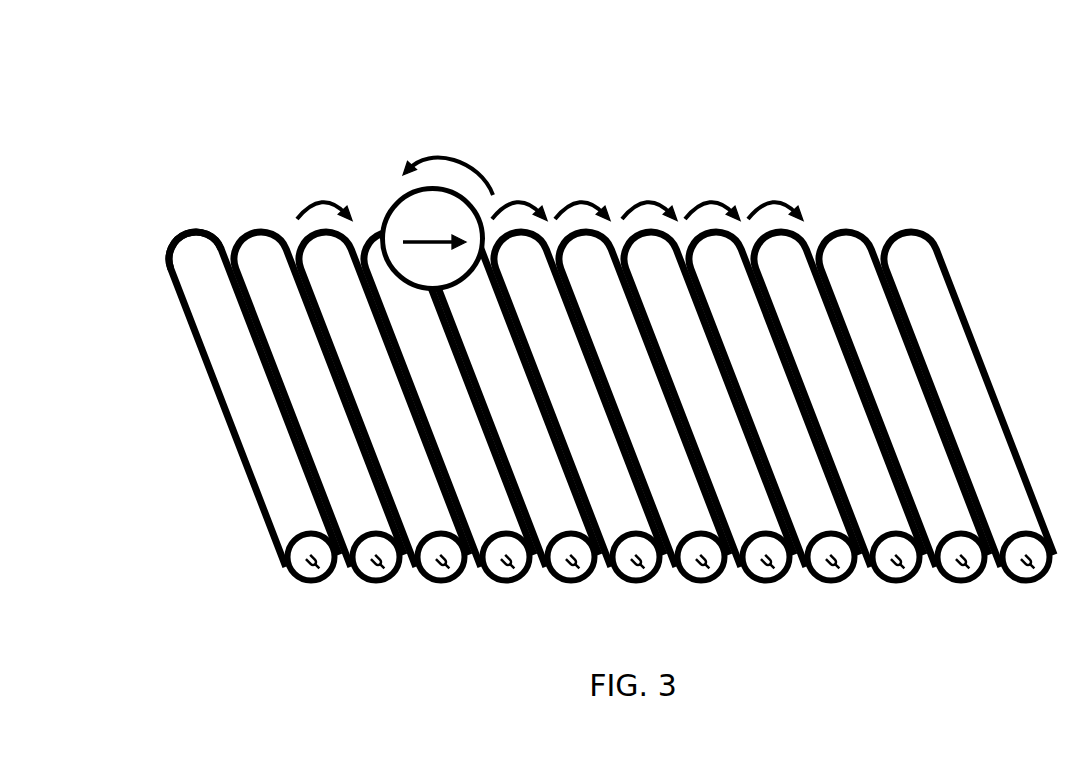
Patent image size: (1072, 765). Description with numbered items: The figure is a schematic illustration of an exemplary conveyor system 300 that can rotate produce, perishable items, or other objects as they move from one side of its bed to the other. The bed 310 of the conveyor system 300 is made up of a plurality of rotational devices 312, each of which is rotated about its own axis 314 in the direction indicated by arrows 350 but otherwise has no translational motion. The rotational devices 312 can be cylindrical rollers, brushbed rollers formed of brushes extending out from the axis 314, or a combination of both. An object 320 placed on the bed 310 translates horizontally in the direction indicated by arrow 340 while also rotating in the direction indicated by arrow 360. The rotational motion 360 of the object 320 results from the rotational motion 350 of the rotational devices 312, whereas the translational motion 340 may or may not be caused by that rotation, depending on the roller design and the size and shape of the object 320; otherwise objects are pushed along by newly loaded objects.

The conveyor system 300 is at (938, 163).
The bed 310 is at (227, 252).
The rotational device 312 is at (190, 245).
The axis 314 is at (303, 565).
The object 320 is at (382, 222).
The arrow indicating translational motion 340 is at (420, 233).
The arrows indicating rotational motion of rotational devices 350 is at (323, 201).
The arrow indicating rotational motion of object 360 is at (445, 155).